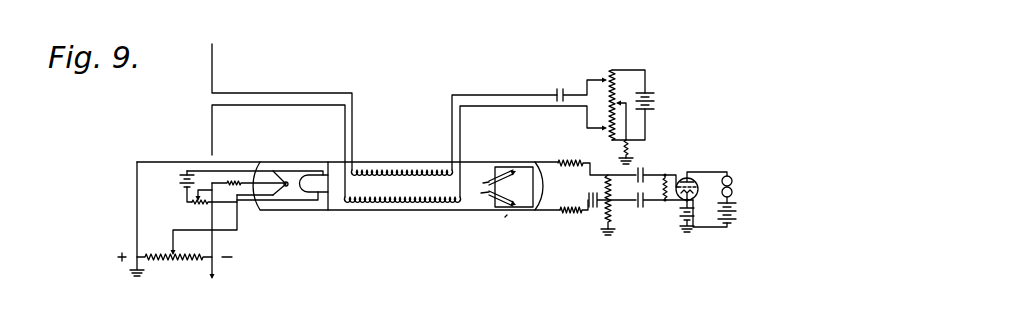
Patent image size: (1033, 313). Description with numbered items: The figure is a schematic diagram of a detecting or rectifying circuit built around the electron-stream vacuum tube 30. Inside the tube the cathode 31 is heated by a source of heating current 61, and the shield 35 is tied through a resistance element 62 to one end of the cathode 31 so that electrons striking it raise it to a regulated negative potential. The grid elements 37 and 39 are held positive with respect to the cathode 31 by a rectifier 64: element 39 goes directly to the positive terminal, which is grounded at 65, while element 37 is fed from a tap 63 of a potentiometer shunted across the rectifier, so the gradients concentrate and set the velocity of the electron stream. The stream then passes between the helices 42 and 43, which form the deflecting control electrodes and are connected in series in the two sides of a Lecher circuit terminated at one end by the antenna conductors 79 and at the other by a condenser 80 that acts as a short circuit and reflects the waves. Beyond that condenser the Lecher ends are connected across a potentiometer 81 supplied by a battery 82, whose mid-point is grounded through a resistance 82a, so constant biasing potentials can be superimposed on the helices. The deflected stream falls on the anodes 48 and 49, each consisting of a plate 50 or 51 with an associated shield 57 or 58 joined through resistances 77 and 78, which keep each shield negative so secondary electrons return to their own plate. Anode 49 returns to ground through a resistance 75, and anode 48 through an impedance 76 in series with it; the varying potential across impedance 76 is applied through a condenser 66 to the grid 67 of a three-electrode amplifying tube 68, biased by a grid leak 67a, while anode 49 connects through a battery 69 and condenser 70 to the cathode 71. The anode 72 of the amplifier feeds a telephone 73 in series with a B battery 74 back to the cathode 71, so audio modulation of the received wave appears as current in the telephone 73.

The vacuum tube 30 is at (418, 211).
The cathode 31 is at (283, 170).
The shield 35 is at (277, 196).
The grid element 37 is at (318, 172).
The grid element 39 is at (330, 202).
The helix 42 is at (381, 168).
The helix 43 is at (384, 201).
The anode 48 is at (513, 157).
The anode 49 is at (504, 216).
The plate 50 is at (478, 182).
The plate 51 is at (477, 193).
The shield 57 is at (488, 170).
The shield 58 is at (493, 197).
The source of heating current 61 is at (173, 185).
The resistance element 62 is at (232, 179).
The tap 63 is at (170, 245).
The rectifier 64 is at (181, 261).
The ground 65 is at (128, 273).
The condenser 66 is at (645, 168).
The grid 67 is at (700, 188).
The grid leak 67a is at (663, 199).
The three-electrode amplifying tube 68 is at (679, 178).
The battery 69 is at (591, 208).
The condenser 70 is at (637, 207).
The cathode 71 is at (683, 210).
The anode 72 is at (697, 174).
The telephone 73 is at (734, 188).
The B battery 74 is at (738, 211).
The resistance 75 is at (606, 226).
The impedance 76 is at (607, 178).
The resistance 77 is at (570, 161).
The resistance 78 is at (565, 214).
The antenna conductors 79 is at (209, 95).
The condenser 80 is at (553, 101).
The potentiometer 81 is at (617, 83).
The battery 82 is at (652, 97).
The resistance 82a is at (632, 148).